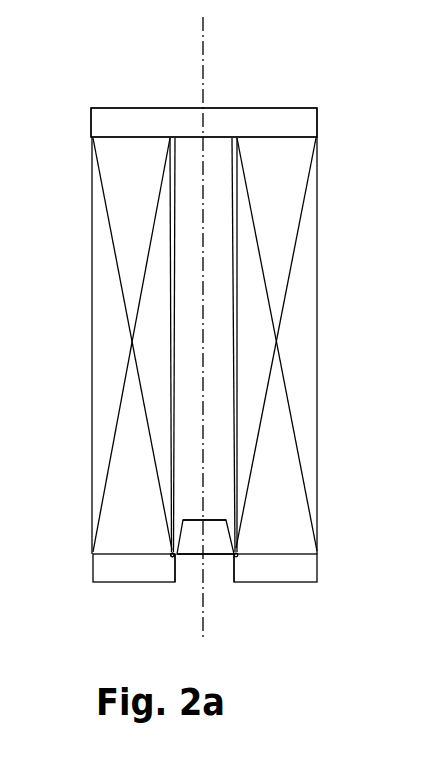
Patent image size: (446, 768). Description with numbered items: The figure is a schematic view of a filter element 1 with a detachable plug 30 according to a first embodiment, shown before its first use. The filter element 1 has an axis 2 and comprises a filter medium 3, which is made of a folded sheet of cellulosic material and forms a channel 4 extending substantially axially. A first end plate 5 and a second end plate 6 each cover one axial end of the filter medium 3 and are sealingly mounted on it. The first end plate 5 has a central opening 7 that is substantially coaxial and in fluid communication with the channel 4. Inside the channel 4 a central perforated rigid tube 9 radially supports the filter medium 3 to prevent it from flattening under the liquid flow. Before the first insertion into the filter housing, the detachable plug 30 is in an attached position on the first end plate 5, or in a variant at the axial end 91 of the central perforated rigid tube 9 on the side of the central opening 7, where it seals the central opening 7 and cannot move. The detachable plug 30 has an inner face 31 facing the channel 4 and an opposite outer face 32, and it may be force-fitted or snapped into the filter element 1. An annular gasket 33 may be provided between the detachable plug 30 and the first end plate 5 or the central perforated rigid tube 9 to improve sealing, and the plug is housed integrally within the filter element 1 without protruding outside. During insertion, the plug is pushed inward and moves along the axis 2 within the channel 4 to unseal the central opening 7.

The filter element 1 is at (345, 133).
The axis 2 is at (204, 41).
The filter medium 3 is at (102, 232).
The channel 4 is at (223, 228).
The first end plate 5 is at (132, 563).
The second end plate 6 is at (157, 125).
The central opening 7 is at (214, 565).
The central perforated rigid tube 9 is at (178, 392).
The detachable plug 30 is at (222, 537).
The inner face 31 is at (212, 518).
The outer face 32 is at (188, 558).
The annular gasket 33 is at (172, 558).
The axial end of the central perforated rigid tube 91 is at (167, 545).